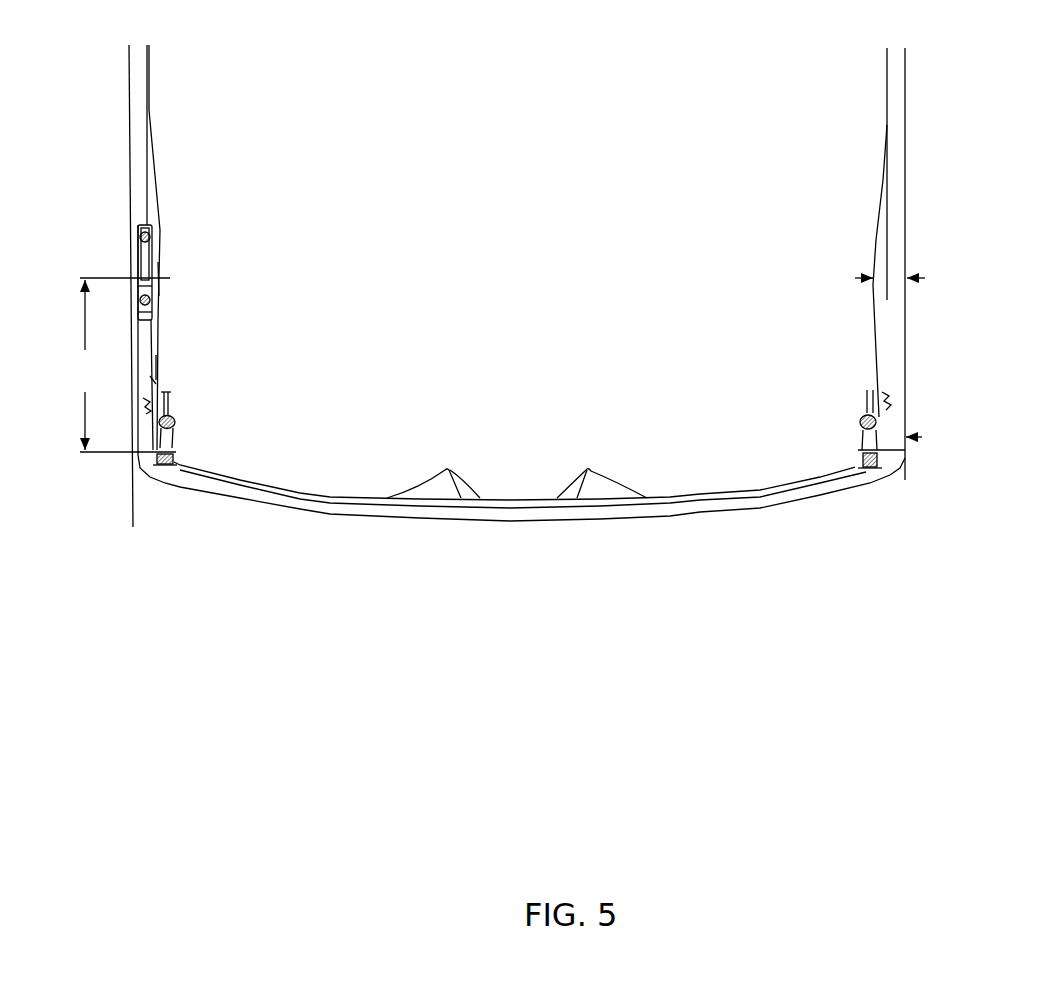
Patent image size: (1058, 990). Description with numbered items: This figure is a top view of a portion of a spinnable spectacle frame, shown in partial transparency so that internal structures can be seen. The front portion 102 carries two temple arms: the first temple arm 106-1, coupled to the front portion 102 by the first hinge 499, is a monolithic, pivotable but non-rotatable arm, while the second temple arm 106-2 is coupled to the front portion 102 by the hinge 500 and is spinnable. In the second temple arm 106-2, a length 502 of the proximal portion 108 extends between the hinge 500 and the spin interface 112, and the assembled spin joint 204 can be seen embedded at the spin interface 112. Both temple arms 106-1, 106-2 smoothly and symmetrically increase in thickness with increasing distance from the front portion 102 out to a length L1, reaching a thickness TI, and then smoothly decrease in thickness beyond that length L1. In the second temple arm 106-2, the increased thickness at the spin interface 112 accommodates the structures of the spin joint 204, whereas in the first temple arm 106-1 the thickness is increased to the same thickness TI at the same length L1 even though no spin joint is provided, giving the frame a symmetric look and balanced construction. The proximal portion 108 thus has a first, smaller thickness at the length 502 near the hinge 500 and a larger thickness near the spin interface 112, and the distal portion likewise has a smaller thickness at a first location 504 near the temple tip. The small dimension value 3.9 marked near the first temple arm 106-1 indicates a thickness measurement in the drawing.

The front portion 102 is at (333, 505).
The first temple arm 106-1 is at (878, 133).
The second temple arm 106-2 is at (158, 121).
The proximal portion 108 is at (152, 377).
The spin interface 112 is at (167, 278).
The spin joint 204 is at (137, 268).
The first hinge 499 is at (855, 427).
The hinge 500 is at (170, 418).
The length of proximal portion 502 is at (160, 368).
The first location 504 is at (138, 98).
The length L1 is at (121, 365).
The thickness TI is at (905, 286).
The dimension value 3.9 is at (923, 439).